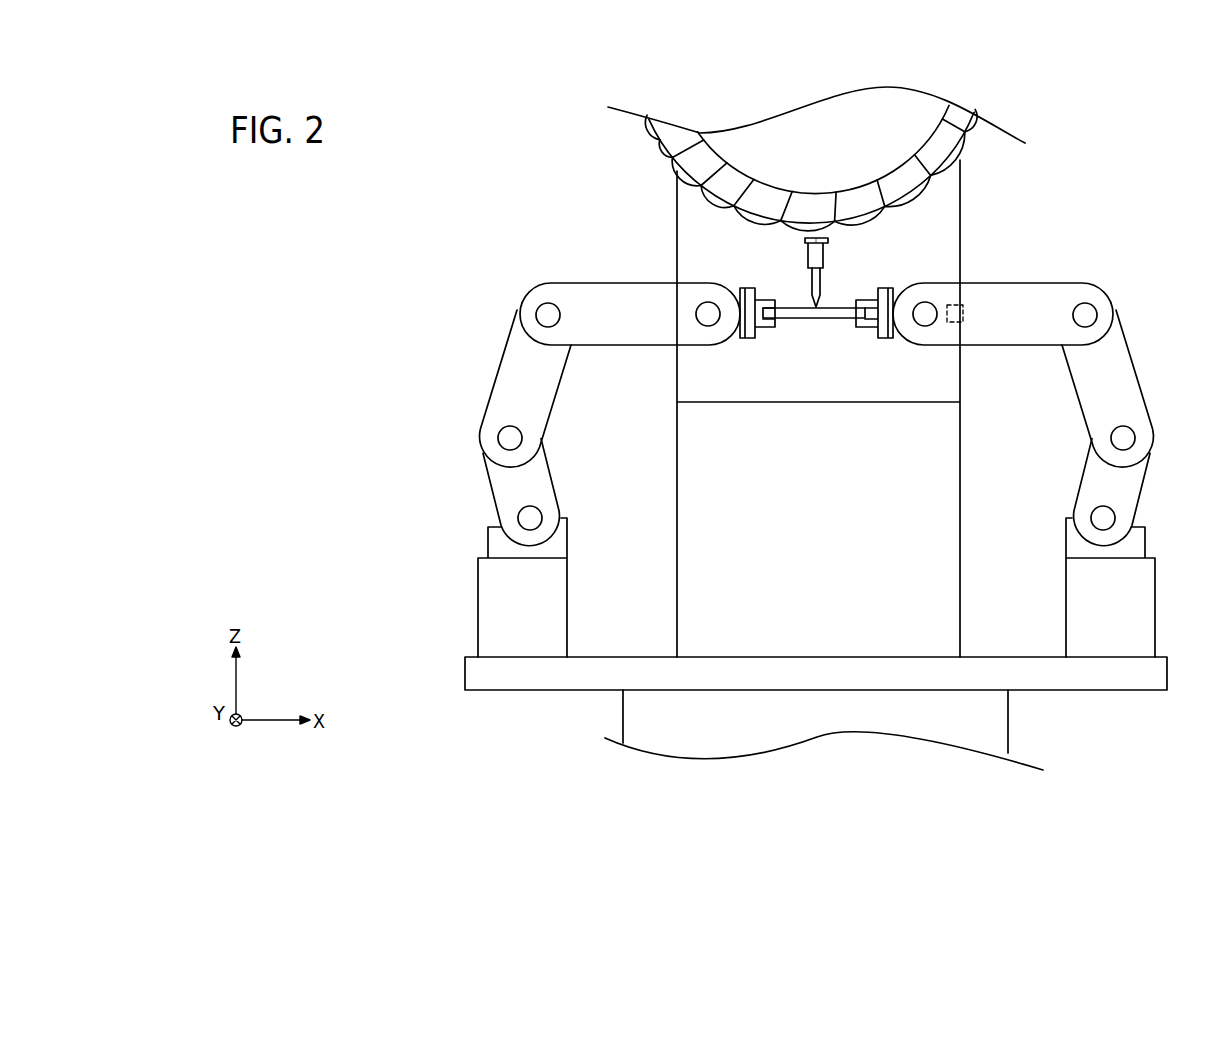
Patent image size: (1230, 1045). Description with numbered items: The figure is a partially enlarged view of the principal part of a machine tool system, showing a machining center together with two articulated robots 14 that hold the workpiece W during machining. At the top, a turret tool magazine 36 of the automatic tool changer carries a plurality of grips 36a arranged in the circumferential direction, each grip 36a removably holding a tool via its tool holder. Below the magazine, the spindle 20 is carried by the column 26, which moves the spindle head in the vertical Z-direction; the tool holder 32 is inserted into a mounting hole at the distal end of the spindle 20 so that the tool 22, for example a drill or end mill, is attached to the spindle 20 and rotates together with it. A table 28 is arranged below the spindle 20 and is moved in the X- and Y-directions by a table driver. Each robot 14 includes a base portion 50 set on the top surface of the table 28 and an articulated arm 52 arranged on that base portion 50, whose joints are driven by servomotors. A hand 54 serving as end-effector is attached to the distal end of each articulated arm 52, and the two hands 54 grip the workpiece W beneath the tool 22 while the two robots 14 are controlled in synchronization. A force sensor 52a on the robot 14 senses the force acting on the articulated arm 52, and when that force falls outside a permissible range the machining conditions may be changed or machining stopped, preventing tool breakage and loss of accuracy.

The robot 14 is at (516, 338).
The spindle 20 is at (812, 238).
The tool 22 is at (810, 287).
The column 26 is at (698, 236).
The table 28 is at (1155, 675).
The tool holder 32 is at (828, 257).
The turret tool magazine 36 is at (770, 138).
The grip 36a is at (927, 204).
The base portion 50 is at (490, 600).
The articulated arm 52 is at (512, 386).
The force sensor 52a is at (963, 313).
The hand 54 is at (763, 328).
The workpiece W is at (802, 320).